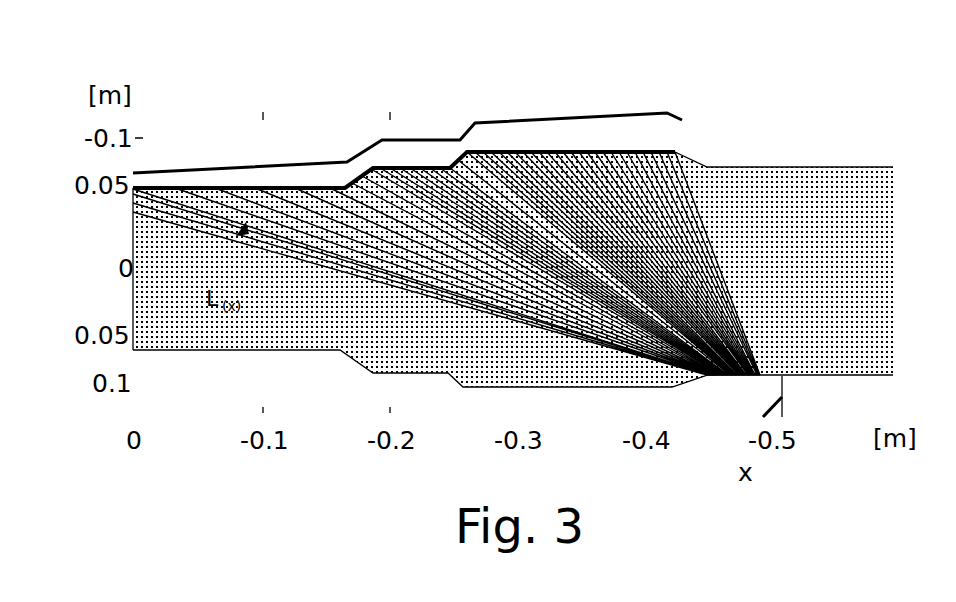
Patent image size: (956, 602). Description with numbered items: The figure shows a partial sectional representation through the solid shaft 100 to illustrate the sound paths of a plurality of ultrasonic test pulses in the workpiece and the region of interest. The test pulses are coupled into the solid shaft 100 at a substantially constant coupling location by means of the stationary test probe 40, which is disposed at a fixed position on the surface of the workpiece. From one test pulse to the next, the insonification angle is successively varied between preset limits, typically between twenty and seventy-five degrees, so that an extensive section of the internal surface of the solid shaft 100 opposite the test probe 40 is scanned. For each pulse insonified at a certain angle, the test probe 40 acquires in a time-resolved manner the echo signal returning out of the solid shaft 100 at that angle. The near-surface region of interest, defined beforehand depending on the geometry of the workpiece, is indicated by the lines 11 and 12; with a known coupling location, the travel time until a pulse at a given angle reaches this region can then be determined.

The line 11 is at (548, 147).
The line 12 is at (495, 112).
The test probe 40 is at (710, 377).
The solid shaft 100 is at (797, 166).